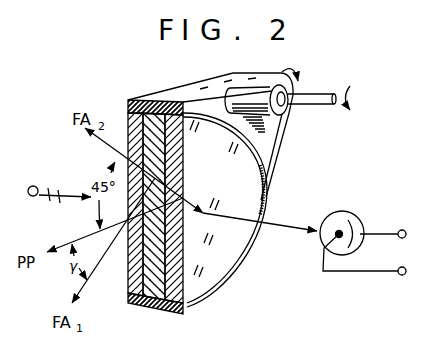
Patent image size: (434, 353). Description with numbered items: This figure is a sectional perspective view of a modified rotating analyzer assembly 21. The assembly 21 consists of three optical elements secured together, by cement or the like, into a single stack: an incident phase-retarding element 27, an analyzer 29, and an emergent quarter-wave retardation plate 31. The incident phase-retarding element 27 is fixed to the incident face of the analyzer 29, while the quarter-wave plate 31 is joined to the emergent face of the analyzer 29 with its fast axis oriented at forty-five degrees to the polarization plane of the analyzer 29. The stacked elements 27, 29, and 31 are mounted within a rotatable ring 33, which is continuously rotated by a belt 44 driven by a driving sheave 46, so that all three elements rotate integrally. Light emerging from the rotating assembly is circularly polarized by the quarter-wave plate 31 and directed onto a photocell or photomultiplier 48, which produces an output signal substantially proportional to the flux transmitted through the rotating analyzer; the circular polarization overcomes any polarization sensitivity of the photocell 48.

The rotating analyzer assembly 21 is at (236, 217).
The incident phase-retarding element 27 is at (137, 134).
The analyzer 29 is at (156, 117).
The emergent quarter-wave retardation plate 31 is at (207, 272).
The rotatable ring 33 is at (241, 243).
The belt 44 is at (193, 93).
The driving sheave 46 is at (284, 110).
The photocell or photomultiplier 48 is at (336, 213).